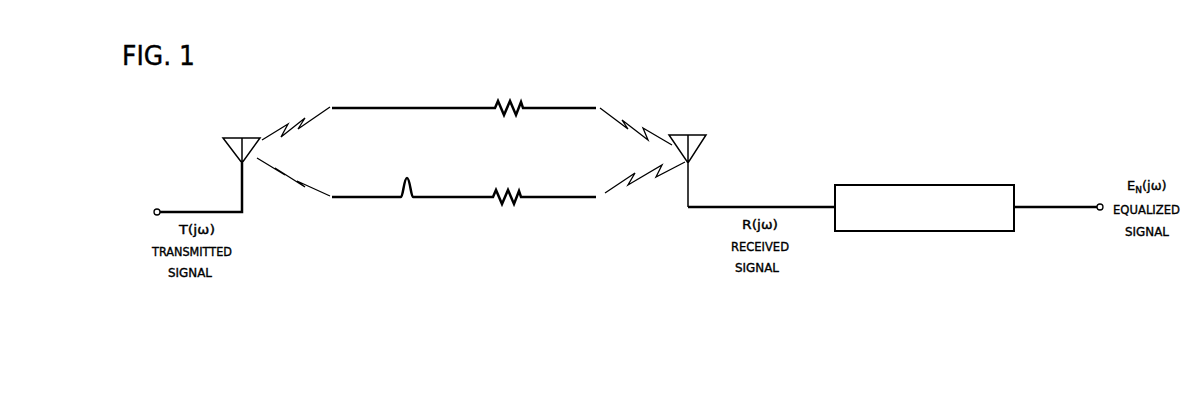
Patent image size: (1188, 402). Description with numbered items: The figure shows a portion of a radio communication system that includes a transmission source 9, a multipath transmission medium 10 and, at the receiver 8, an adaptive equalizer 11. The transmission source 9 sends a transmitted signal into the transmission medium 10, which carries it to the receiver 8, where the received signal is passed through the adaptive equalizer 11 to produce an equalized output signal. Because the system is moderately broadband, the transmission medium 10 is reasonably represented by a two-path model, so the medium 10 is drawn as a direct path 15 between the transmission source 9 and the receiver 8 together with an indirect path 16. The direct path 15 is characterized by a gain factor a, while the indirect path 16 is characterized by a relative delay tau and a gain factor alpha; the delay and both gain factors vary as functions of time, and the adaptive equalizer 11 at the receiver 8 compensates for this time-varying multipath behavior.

The receiver 8 is at (692, 184).
The transmission source 9 is at (241, 178).
The multipath transmission medium 10 is at (548, 64).
The adaptive equalizer 11 is at (982, 186).
The direct path 15 is at (439, 108).
The indirect path 16 is at (441, 198).